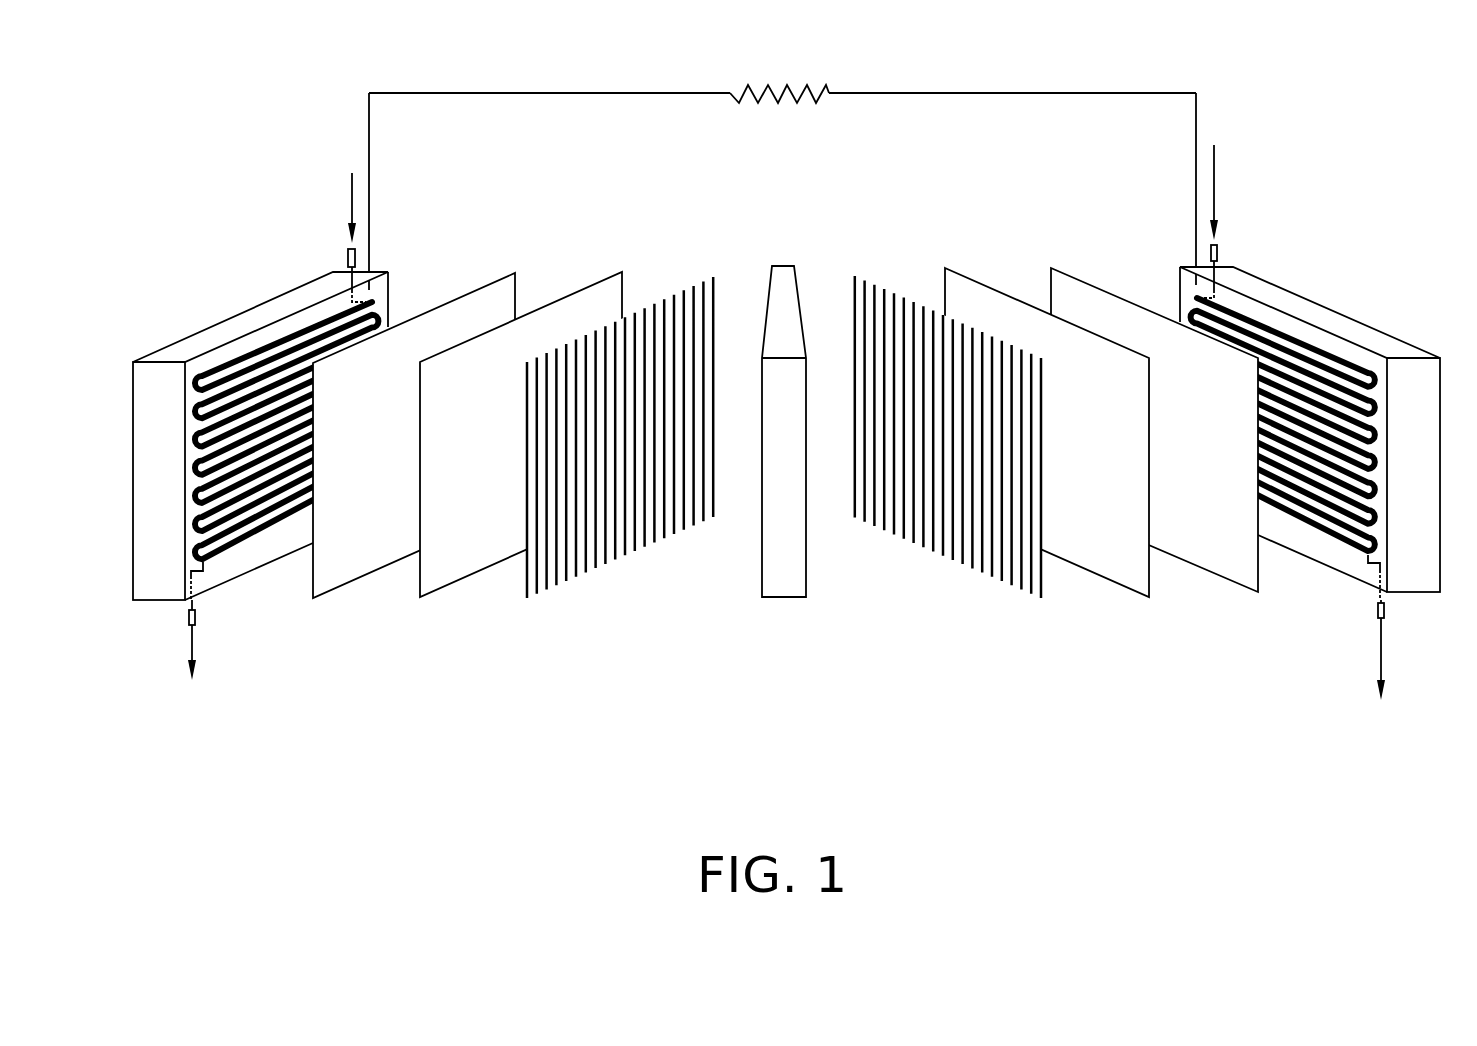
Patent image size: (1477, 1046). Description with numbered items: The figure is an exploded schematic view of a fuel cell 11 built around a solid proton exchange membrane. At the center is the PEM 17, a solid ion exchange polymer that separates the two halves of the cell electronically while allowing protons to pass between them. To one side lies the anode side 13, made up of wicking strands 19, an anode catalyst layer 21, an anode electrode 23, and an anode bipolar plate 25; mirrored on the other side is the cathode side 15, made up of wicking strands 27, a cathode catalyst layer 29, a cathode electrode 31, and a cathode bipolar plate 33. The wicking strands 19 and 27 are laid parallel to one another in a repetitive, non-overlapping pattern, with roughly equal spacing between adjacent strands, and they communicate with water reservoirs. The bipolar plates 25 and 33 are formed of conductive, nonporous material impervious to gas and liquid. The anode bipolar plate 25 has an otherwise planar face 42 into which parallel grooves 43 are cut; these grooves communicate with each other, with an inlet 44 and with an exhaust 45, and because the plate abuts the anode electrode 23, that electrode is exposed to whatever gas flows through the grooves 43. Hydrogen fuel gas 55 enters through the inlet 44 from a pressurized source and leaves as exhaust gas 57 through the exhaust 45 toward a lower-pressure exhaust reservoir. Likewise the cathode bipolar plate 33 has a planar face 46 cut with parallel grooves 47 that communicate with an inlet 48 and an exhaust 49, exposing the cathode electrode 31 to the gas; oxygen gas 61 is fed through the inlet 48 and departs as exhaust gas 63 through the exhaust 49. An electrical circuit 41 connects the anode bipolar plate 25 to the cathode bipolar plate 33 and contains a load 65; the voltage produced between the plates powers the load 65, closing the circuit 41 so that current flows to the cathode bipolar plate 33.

The fuel cell 11 is at (470, 705).
The anode side 13 is at (532, 437).
The cathode side 15 is at (1039, 433).
The PEM 17 is at (786, 266).
The wicking strands 19 is at (692, 262).
The anode catalyst layer 21 is at (572, 292).
The anode electrode 23 is at (514, 272).
The anode bipolar plate 25 is at (284, 432).
The wicking strands 27 is at (892, 252).
The cathode catalyst layer 29 is at (995, 270).
The cathode electrode 31 is at (1090, 272).
The cathode bipolar plate 33 is at (1319, 422).
The electrical circuit 41 is at (782, 166).
The face 42 is at (252, 561).
The parallel grooves 43 is at (296, 338).
The inlet 44 is at (349, 252).
The exhaust 45 is at (196, 613).
The face 46 is at (1352, 568).
The parallel grooves 47 is at (1307, 532).
The inlet 48 is at (1218, 253).
The exhaust 49 is at (1387, 611).
The hydrogen fuel gas 55 is at (350, 210).
The exhaust gas 57 is at (197, 653).
The oxygen gas 61 is at (1215, 202).
The exhaust gas 63 is at (1390, 655).
The load 65 is at (787, 84).